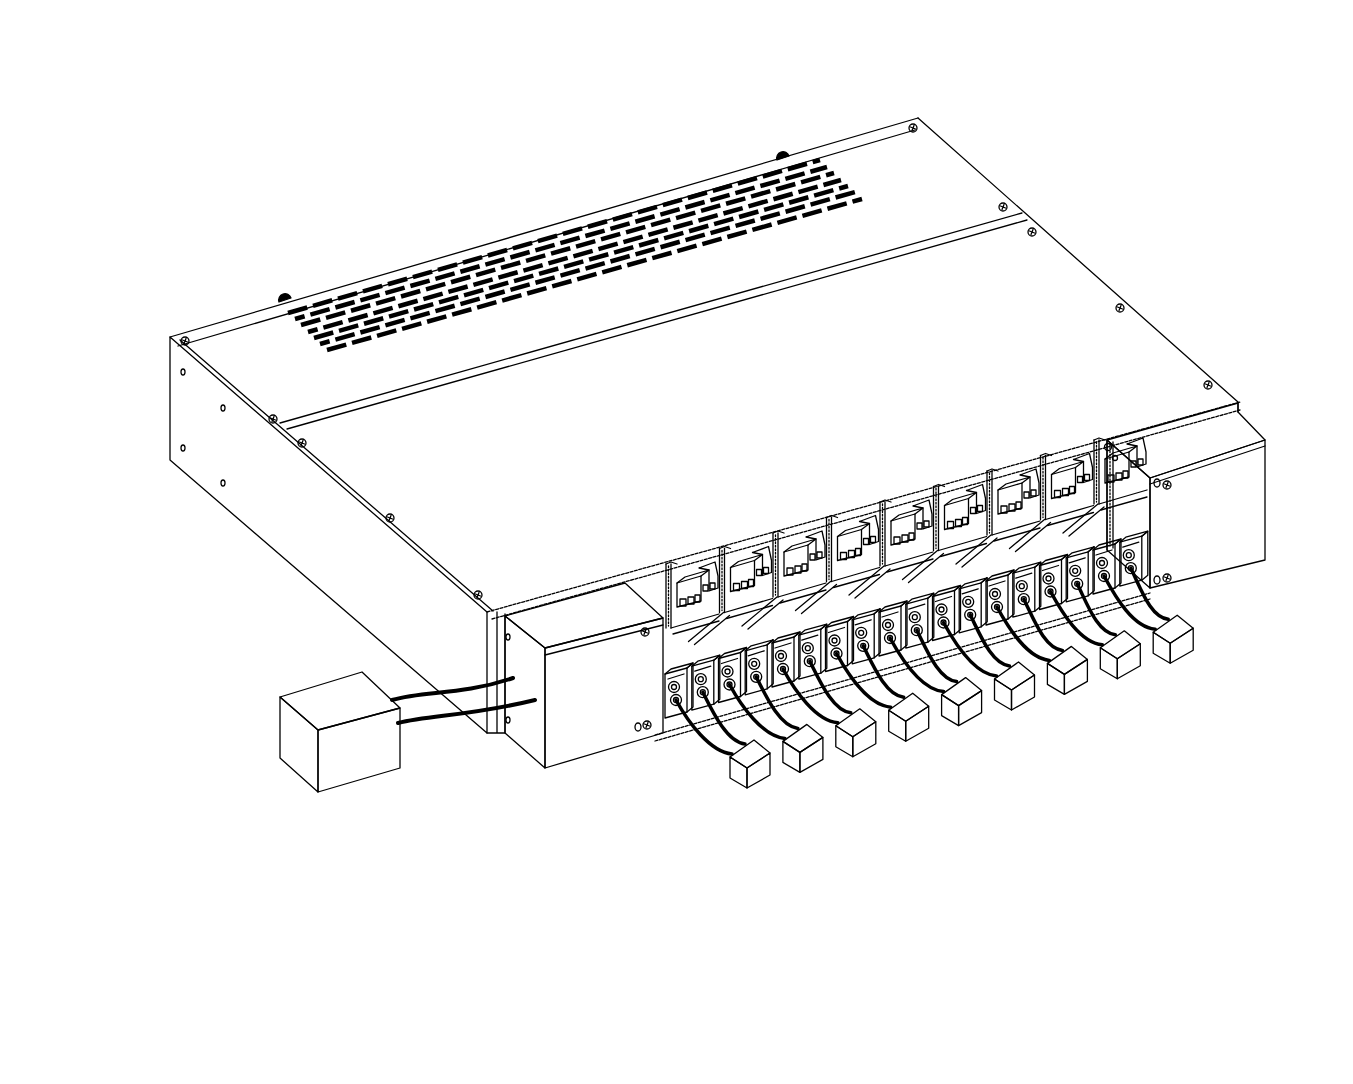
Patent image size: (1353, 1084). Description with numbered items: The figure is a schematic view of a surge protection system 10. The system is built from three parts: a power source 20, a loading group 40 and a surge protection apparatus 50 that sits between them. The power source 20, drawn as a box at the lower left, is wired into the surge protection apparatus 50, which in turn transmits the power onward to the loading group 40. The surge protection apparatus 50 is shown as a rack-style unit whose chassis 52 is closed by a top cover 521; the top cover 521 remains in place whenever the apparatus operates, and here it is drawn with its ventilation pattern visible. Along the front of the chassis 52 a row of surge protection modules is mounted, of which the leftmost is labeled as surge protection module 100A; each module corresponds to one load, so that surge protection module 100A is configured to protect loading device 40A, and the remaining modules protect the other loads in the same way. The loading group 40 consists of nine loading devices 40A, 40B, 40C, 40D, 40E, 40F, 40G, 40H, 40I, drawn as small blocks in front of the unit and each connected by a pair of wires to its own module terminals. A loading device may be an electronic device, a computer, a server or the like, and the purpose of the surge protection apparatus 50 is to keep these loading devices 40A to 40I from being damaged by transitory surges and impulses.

The surge protection system 10 is at (167, 86).
The power source 20 is at (302, 753).
The loading group 40 is at (959, 727).
The loading device 40A is at (759, 773).
The loading device 40B is at (812, 757).
The loading device 40C is at (865, 742).
The loading device 40D is at (918, 726).
The loading device 40E is at (971, 711).
The loading device 40F is at (1024, 695).
The loading device 40G is at (1076, 679).
The loading device 40H is at (1129, 664).
The loading device 40I is at (1169, 704).
The surge protection apparatus 50 is at (360, 280).
The chassis 52 is at (285, 530).
The top cover 521 is at (1077, 282).
The surge protection module 100A is at (685, 740).